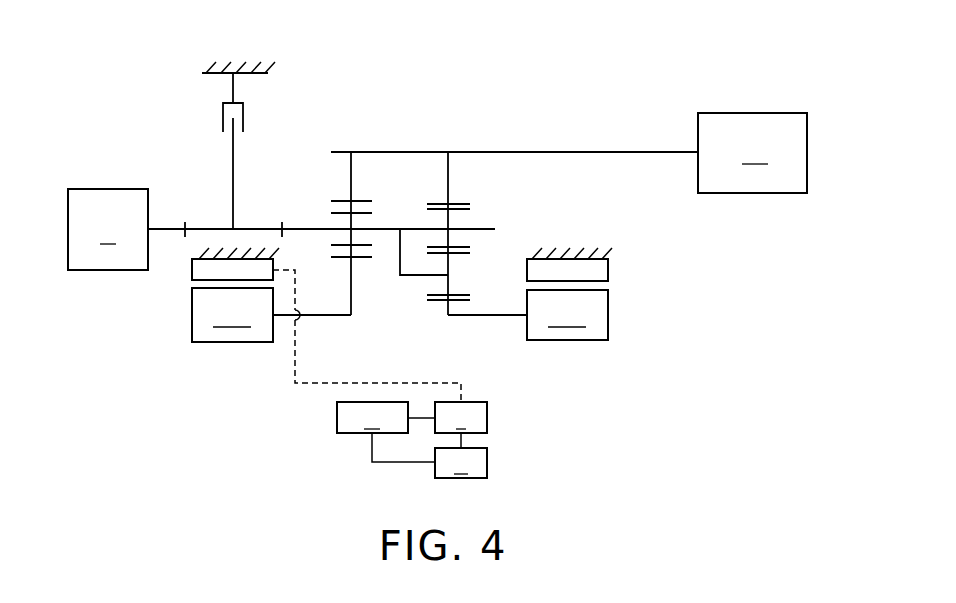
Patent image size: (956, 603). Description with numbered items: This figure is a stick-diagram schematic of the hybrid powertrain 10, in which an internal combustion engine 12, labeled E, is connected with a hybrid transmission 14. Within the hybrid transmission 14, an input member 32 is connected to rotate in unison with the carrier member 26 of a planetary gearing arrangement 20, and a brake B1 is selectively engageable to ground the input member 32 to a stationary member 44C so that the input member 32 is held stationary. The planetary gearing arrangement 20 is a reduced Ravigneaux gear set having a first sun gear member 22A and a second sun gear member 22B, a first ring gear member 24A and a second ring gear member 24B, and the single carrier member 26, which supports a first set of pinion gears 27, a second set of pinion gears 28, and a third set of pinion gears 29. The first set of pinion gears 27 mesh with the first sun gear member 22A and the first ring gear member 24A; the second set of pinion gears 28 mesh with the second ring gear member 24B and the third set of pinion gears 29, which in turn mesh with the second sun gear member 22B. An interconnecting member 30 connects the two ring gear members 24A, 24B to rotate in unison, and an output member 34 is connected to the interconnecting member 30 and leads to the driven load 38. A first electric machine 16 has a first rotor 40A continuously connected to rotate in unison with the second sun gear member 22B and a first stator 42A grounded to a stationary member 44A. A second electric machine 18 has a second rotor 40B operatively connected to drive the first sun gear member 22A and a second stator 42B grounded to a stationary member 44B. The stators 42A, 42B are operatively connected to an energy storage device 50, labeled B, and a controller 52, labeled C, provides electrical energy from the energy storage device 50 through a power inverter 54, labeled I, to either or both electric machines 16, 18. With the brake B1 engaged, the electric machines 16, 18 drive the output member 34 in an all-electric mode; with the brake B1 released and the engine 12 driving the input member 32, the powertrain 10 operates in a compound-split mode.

The hybrid powertrain 10 is at (539, 76).
The internal combustion engine 12 is at (108, 189).
The hybrid transmission 14 is at (261, 388).
The first electric machine 16 is at (634, 330).
The second electric machine 18 is at (171, 338).
The planetary gearing arrangement 20 is at (332, 168).
The first sun gear member 22A is at (358, 257).
The second sun gear member 22B is at (440, 300).
The first ring gear member 24A is at (359, 201).
The second ring gear member 24B is at (462, 204).
The carrier member 26 is at (170, 229).
The first set of pinion gears 27 is at (350, 227).
The second set of pinion gears 28 is at (447, 226).
The third set of pinion gears 29 is at (448, 266).
The interconnecting member 30 is at (407, 152).
The input member 32 is at (220, 229).
The output member 34 is at (578, 152).
The load 38 is at (752, 153).
The first rotor 40A is at (528, 315).
The second rotor 40B is at (271, 315).
The first stator 42A is at (610, 271).
The second stator 42B is at (192, 272).
The stationary member 44A is at (612, 251).
The stationary member 44B is at (198, 250).
The stationary member 44C is at (205, 70).
The energy storage device 50 is at (337, 418).
The controller 52 is at (487, 467).
The power inverter 54 is at (487, 425).
The brake B1 is at (213, 141).